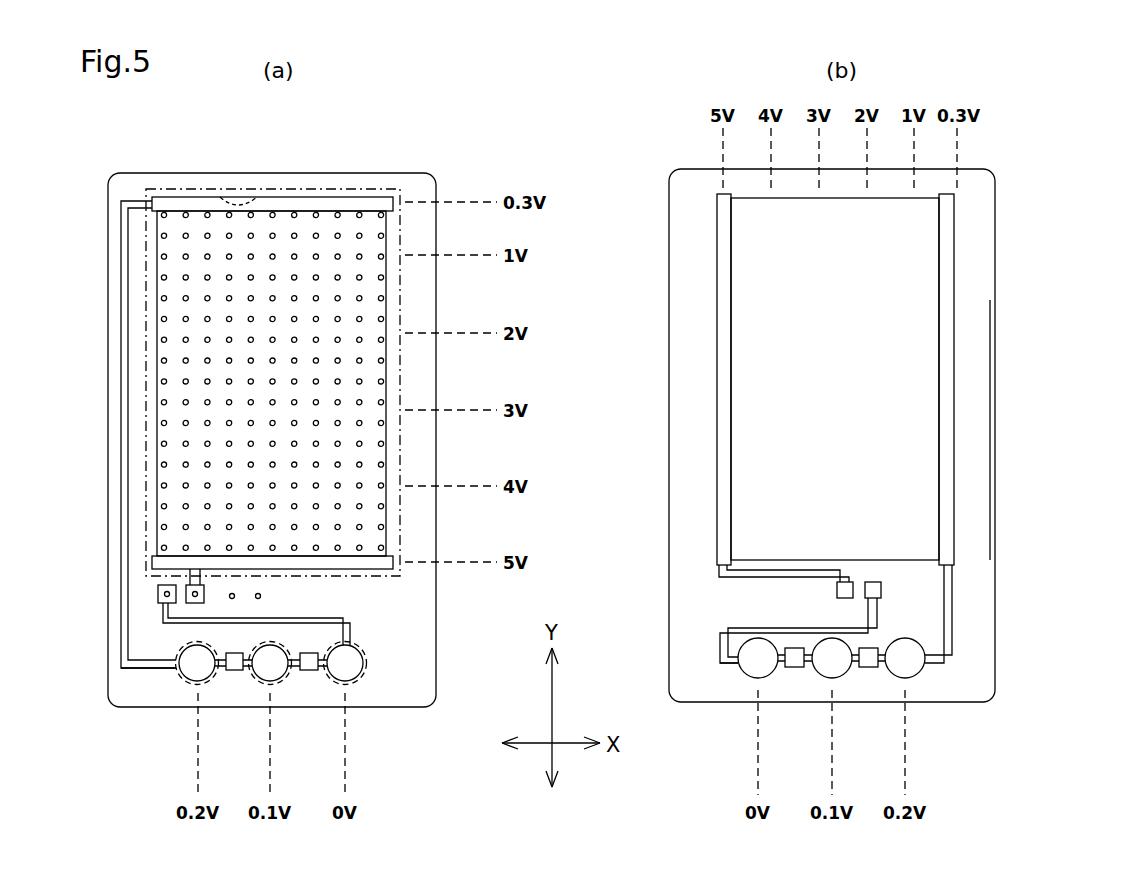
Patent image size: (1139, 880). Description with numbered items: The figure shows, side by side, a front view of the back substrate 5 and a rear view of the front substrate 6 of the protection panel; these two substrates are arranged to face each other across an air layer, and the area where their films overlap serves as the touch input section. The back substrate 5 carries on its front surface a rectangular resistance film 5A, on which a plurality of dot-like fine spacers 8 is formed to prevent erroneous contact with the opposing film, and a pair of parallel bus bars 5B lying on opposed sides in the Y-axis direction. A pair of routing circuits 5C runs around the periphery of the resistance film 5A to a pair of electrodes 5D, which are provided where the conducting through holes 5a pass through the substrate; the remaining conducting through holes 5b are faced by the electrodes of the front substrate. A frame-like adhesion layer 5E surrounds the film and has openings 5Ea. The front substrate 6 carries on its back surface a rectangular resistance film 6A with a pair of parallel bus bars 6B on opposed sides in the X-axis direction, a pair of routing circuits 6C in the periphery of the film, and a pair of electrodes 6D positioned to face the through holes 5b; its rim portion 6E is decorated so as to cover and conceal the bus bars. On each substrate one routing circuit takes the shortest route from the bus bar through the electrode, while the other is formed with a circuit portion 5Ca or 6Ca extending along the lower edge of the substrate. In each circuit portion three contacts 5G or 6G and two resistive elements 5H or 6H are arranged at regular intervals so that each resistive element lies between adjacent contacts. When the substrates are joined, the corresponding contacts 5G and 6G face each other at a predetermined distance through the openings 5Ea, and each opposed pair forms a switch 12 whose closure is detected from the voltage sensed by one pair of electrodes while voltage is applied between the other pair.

The back substrate 5 is at (458, 170).
The resistance film 5A is at (370, 460).
The bus bars 5B is at (315, 208).
The routing circuits 5C is at (124, 333).
The circuit portion 5Ca is at (142, 664).
The electrodes 5D is at (167, 607).
The adhesion layer 5E is at (226, 196).
The openings 5Ea is at (362, 640).
The contacts 5G is at (254, 680).
The resistive elements 5H is at (233, 672).
The conducting through holes 5a is at (158, 594).
The conducting through holes 5b is at (235, 598).
The spacers 8 is at (362, 319).
The switch 12 is at (948, 720).
The front substrate 6 is at (1014, 168).
The resistance film 6A is at (913, 347).
The bus bars 6B is at (725, 312).
The routing circuits 6C is at (942, 590).
The circuit portion 6Ca is at (732, 662).
The electrodes 6D is at (873, 582).
The rim portion 6E is at (978, 434).
The contacts 6G is at (557, 716).
The resistive elements 6H is at (794, 669).